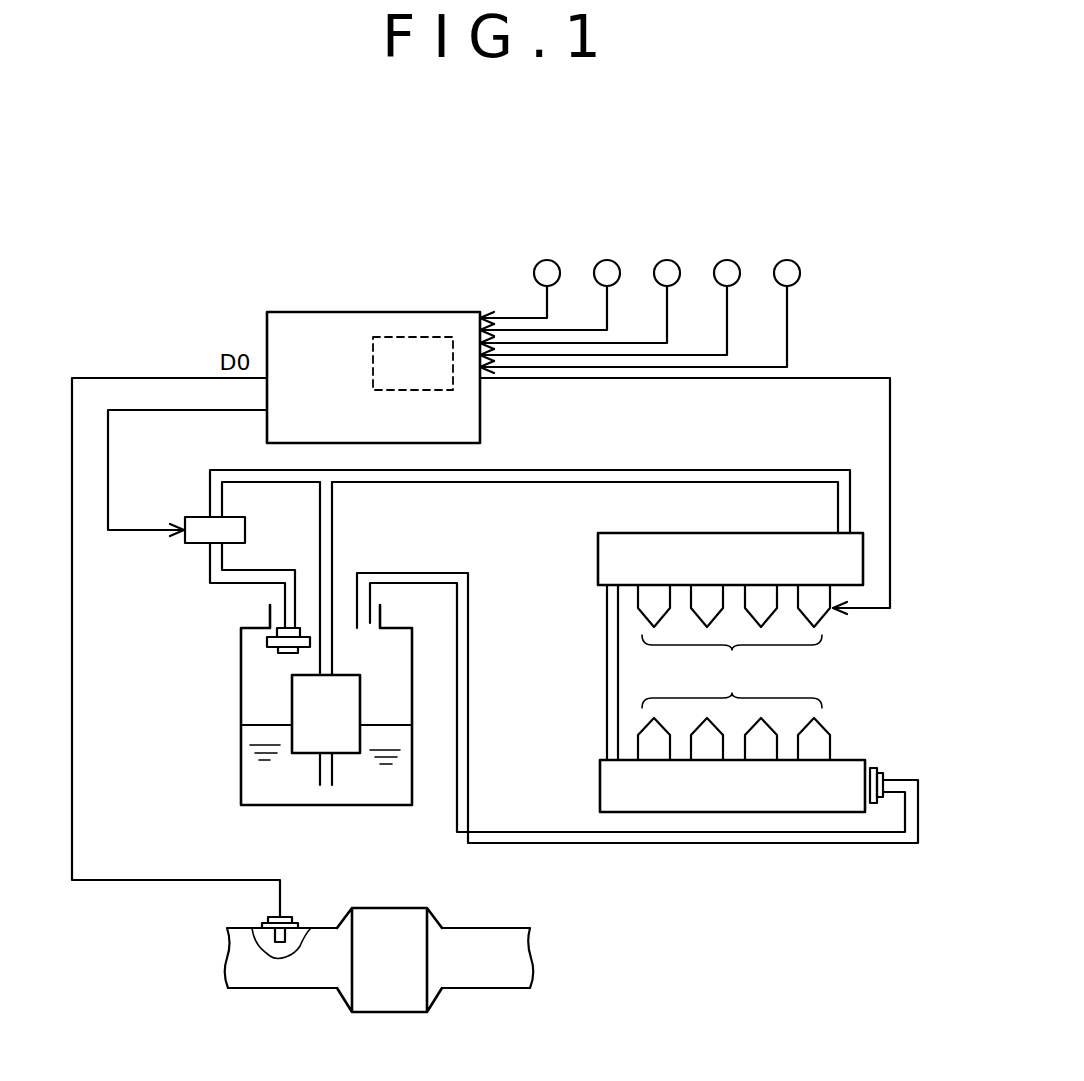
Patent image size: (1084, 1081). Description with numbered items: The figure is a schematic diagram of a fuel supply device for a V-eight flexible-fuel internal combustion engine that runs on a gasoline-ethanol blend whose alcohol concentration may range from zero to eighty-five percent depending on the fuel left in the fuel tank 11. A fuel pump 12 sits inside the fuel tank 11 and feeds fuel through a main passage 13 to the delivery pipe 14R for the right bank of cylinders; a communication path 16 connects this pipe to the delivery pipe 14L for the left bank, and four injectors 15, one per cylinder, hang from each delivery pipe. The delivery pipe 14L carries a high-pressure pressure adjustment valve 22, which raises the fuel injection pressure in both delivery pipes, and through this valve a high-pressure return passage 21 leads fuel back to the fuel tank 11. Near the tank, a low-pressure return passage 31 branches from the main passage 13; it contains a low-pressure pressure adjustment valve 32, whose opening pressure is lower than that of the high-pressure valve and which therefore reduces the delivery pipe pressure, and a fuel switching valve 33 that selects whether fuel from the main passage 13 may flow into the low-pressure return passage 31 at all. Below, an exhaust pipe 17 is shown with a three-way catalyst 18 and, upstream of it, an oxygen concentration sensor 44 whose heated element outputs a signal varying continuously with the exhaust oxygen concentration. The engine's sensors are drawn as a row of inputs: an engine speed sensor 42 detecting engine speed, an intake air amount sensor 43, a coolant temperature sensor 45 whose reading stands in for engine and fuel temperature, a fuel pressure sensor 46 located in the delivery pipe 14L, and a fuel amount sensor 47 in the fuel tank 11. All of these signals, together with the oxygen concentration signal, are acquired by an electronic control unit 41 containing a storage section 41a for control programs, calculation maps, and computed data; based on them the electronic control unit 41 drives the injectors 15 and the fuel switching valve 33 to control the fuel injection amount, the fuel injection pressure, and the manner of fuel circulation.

The fuel tank 11 is at (241, 715).
The fuel pump 12 is at (345, 755).
The main passage 13 is at (332, 495).
The delivery pipe 14R is at (598, 555).
The delivery pipe 14L is at (600, 786).
The injectors 15 is at (734, 672).
The communication path 16 is at (607, 670).
The exhaust pipe 17 is at (280, 992).
The three-way catalyst 18 is at (386, 1015).
The high-pressure return passage 21 is at (565, 845).
The high-pressure pressure adjustment valve 22 is at (878, 768).
The low-pressure return passage 31 is at (210, 475).
The low-pressure pressure adjustment valve 32 is at (290, 656).
The fuel switching valve 33 is at (185, 517).
The electronic control unit 41 is at (296, 312).
The storage section 41a is at (420, 337).
The engine speed sensor 42 is at (557, 287).
The intake air amount sensor 43 is at (617, 287).
The oxygen concentration sensor 44 is at (296, 916).
The coolant temperature sensor 45 is at (677, 287).
The fuel pressure sensor 46 is at (737, 287).
The fuel amount sensor 47 is at (797, 287).